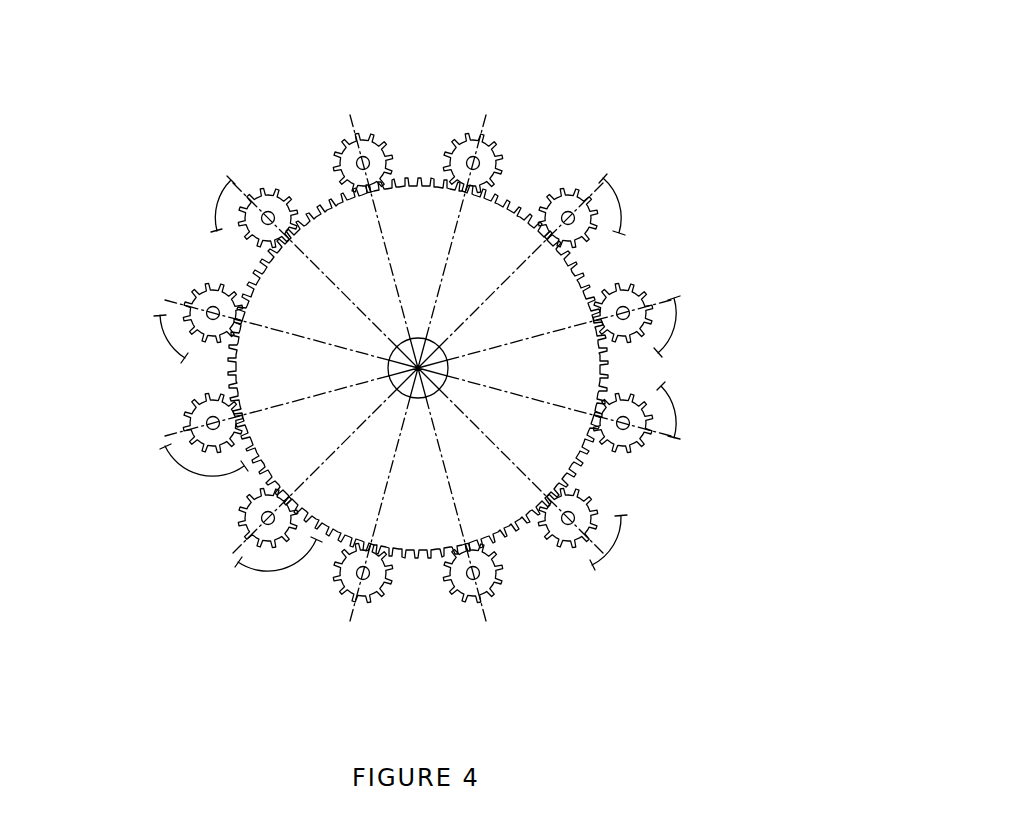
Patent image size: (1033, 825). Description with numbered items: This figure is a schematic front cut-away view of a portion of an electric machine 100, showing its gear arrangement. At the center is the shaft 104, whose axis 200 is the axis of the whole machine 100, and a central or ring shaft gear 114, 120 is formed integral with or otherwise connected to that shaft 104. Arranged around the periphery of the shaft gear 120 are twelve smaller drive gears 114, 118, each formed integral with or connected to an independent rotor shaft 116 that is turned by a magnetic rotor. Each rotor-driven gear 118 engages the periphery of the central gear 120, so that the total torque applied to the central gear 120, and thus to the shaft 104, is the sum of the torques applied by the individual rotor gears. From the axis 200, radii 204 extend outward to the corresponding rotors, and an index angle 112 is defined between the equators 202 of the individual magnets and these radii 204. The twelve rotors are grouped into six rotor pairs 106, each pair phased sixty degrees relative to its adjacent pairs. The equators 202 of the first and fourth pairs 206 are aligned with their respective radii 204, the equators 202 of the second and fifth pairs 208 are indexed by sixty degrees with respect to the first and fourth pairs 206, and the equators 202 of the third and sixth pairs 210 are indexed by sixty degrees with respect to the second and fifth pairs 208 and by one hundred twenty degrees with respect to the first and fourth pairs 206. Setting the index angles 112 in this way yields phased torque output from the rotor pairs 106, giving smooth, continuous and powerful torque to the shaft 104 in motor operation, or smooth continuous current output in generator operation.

The electric machine 100 is at (592, 64).
The shaft 104 is at (436, 342).
The rotor pair 106 is at (427, 364).
The index angle 112 is at (226, 196).
The gears 114 is at (427, 364).
The rotor shaft 116 is at (271, 211).
The drive gear 118 is at (467, 142).
The shaft gear 120 is at (420, 517).
The axis 200 is at (403, 296).
The equator 202 is at (353, 148).
The radius 204 is at (449, 252).
The first and fourth rotor pairs 206 is at (427, 364).
The second and fifth rotor pairs 208 is at (220, 297).
The third and sixth rotor pairs 210 is at (620, 293).